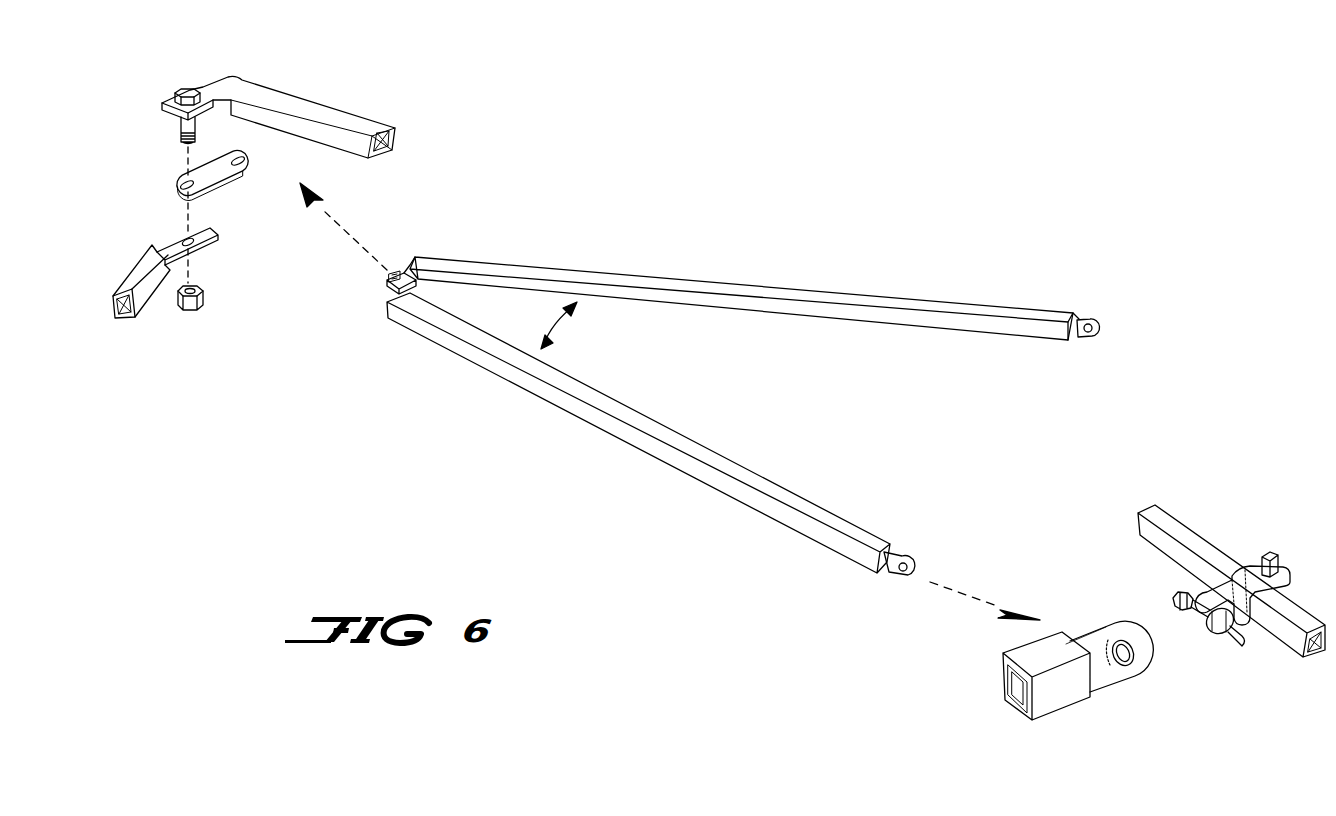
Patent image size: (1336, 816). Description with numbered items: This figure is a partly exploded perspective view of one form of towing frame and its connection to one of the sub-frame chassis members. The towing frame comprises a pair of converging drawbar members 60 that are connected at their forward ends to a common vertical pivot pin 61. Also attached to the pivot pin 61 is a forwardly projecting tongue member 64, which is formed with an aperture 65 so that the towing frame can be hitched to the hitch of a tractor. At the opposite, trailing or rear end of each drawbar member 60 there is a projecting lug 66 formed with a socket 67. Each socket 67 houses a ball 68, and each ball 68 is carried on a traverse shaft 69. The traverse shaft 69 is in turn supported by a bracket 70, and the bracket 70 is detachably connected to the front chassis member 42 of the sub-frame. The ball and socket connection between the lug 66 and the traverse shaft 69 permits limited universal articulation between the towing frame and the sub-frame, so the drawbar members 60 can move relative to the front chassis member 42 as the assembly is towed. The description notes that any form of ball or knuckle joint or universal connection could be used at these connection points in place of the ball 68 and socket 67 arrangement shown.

The front chassis member 42 is at (1174, 526).
The drawbar member 60 is at (336, 116).
The vertical pivot pin 61 is at (199, 123).
The tongue member 64 is at (216, 185).
The aperture 65 is at (243, 160).
The lug 66 is at (910, 568).
The socket 67 is at (1128, 668).
The ball 68 is at (1216, 626).
The traverse shaft 69 is at (1241, 645).
The bracket 70 is at (1248, 568).